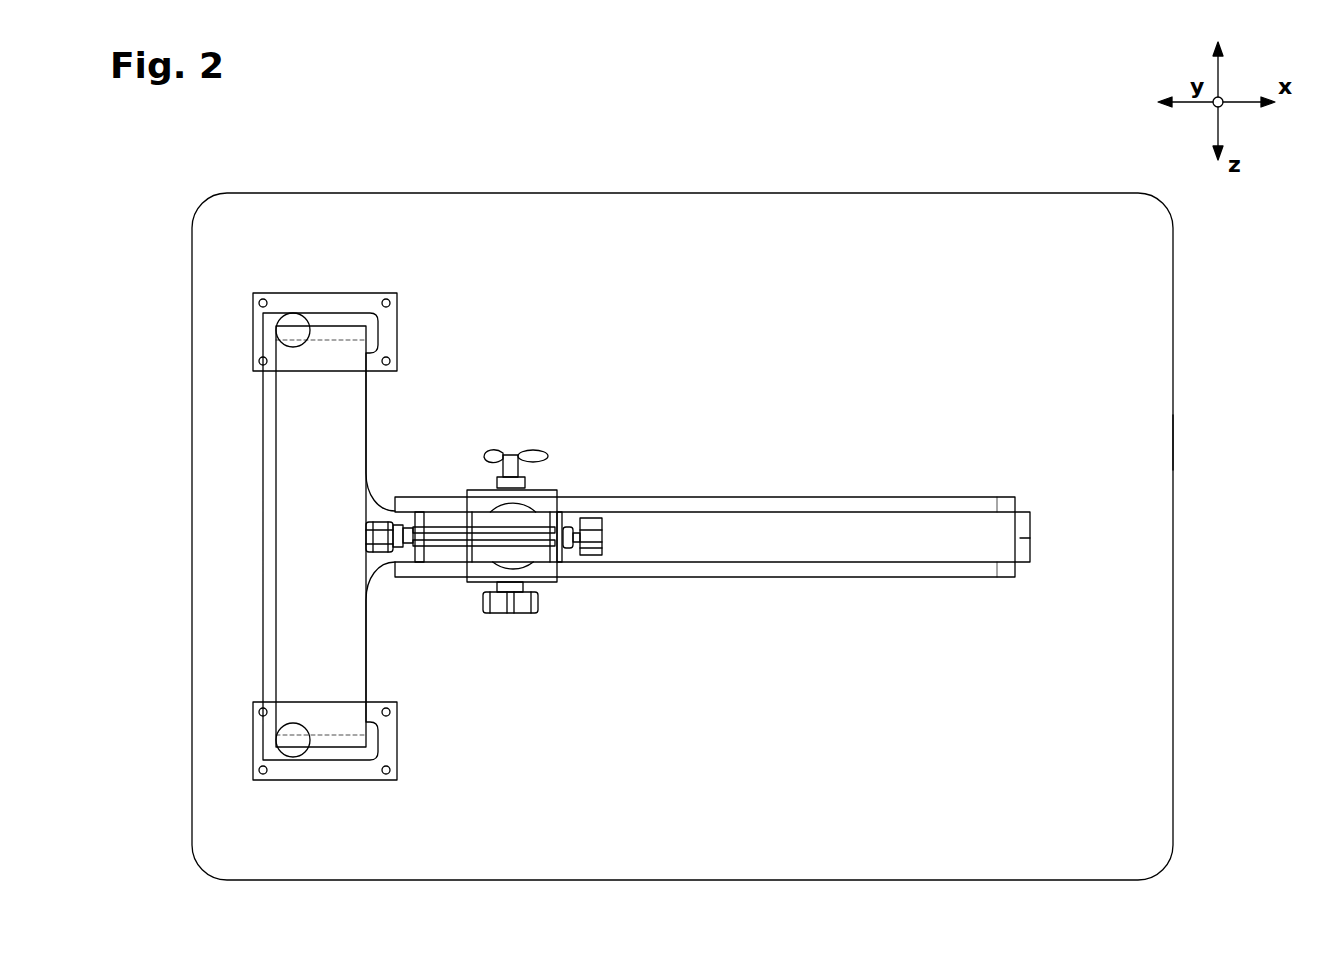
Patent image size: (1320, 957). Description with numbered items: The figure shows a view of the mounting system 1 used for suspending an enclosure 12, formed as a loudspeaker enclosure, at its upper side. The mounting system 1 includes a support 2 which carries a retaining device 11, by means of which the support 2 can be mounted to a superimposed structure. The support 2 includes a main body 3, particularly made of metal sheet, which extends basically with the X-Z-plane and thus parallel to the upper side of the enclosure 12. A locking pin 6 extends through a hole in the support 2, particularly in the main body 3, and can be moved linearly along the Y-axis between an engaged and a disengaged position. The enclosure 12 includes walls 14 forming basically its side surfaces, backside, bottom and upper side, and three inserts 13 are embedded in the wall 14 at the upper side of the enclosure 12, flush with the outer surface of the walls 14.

The mounting system 1 is at (553, 291).
The support 2 is at (698, 546).
The main body 3 is at (345, 414).
The locking pin 6 is at (293, 331).
The retaining device 11 is at (507, 537).
The enclosure 12 is at (972, 179).
The inserts 13 is at (386, 326).
The walls 14 is at (1133, 441).